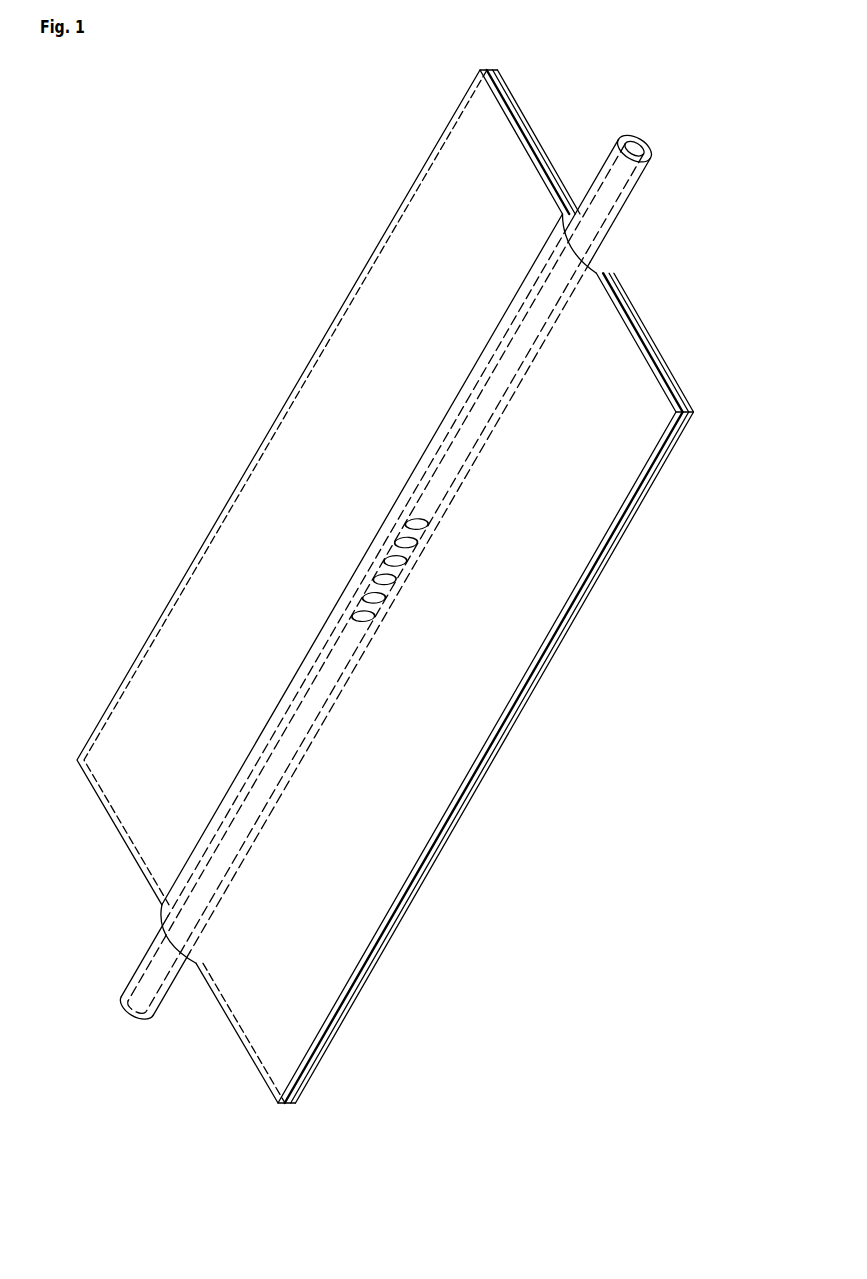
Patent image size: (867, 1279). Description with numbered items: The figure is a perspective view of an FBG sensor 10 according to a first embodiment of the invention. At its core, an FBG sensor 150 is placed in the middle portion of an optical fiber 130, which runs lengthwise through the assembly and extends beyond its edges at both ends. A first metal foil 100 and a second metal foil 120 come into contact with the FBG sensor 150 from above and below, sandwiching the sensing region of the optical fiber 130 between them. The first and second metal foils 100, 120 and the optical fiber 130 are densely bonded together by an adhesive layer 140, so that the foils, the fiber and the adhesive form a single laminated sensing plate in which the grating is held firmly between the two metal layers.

The FBG sensor 10 is at (92, 608).
The first metal foil 100 is at (457, 197).
The second metal foil 120 is at (636, 514).
The optical fiber 130 is at (637, 190).
The adhesive layer 140 is at (358, 985).
The FBG sensor 150 is at (352, 628).